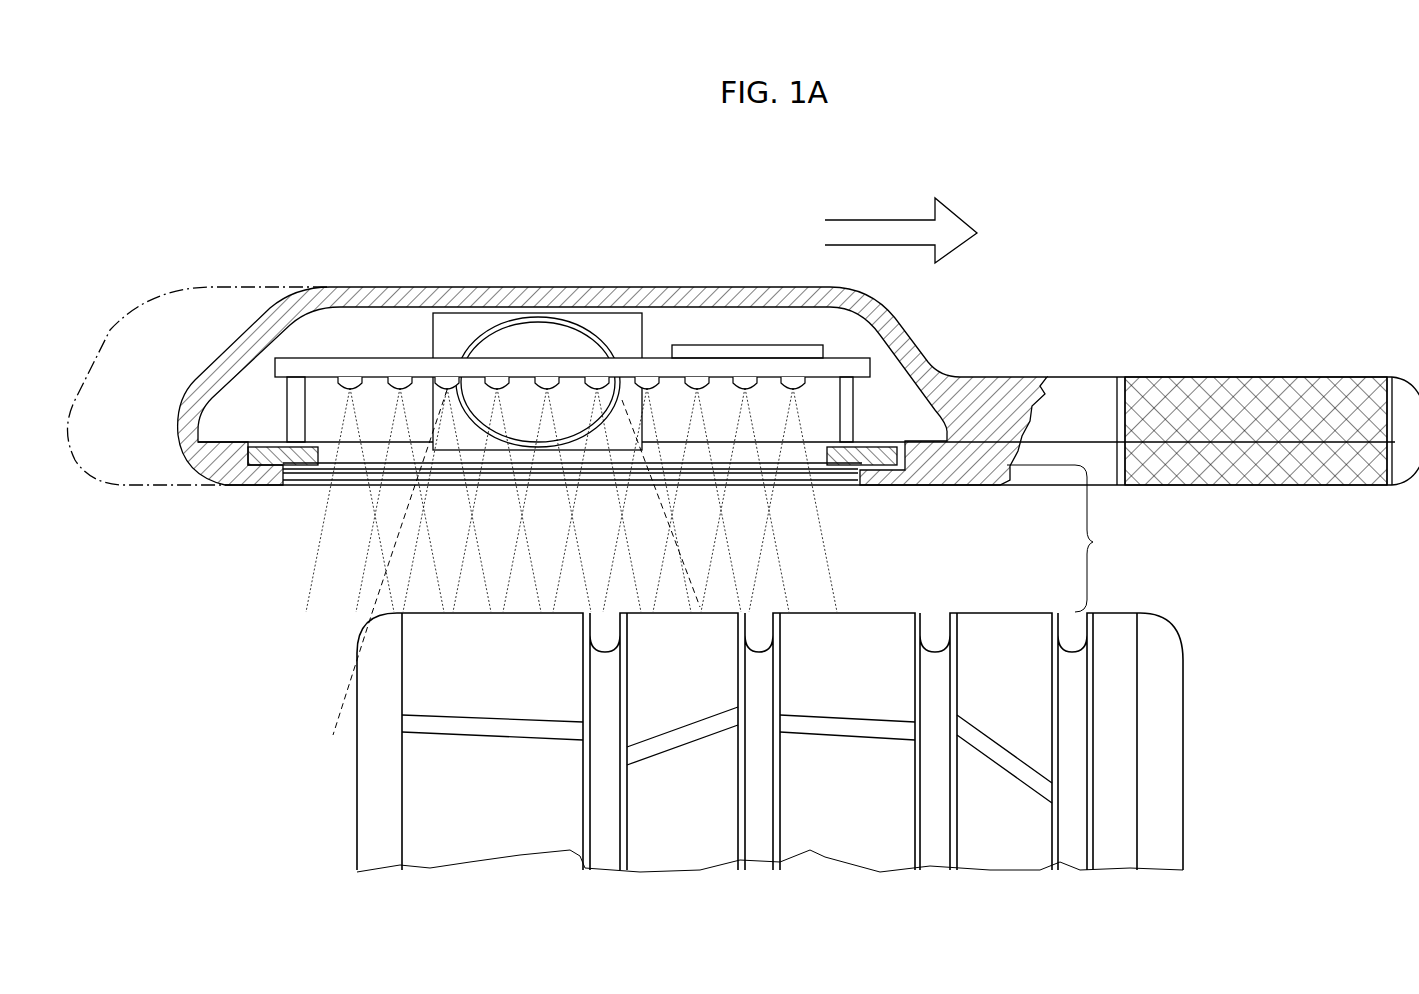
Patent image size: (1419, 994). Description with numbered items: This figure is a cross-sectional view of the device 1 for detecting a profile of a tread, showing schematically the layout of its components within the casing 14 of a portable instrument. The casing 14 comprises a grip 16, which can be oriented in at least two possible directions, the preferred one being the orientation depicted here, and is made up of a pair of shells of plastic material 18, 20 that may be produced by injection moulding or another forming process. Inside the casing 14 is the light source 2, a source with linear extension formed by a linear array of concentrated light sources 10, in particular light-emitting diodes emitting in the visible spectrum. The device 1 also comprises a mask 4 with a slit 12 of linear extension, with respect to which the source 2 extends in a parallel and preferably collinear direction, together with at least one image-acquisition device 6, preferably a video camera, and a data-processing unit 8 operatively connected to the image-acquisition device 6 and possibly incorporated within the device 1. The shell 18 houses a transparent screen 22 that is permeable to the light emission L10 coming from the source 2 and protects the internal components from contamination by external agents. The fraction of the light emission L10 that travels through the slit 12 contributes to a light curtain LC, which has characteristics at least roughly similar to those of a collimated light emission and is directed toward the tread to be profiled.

The device for detecting a profile of a tread 1 is at (541, 178).
The light source 2 is at (336, 393).
The mask 4 is at (918, 448).
The image-acquisition device 6 is at (615, 343).
The data-processing unit 8 is at (753, 348).
The concentrated light sources 10 is at (371, 385).
The slit 12 is at (812, 470).
The casing 14 is at (148, 318).
The grip 16 is at (1264, 370).
The shell of plastic material 18 is at (192, 462).
The shell of plastic material 20 is at (233, 348).
The transparent screen 22 is at (310, 482).
The light emission L10 is at (810, 416).
The light curtain LC is at (1067, 538).